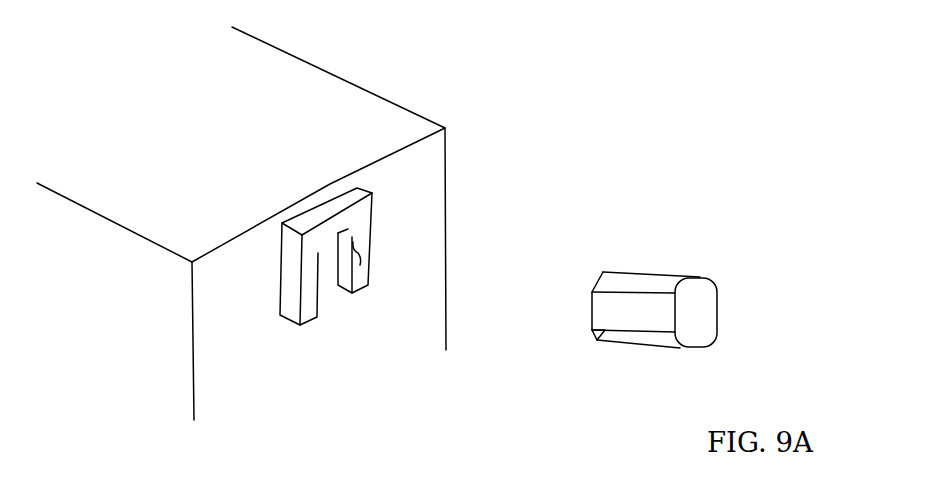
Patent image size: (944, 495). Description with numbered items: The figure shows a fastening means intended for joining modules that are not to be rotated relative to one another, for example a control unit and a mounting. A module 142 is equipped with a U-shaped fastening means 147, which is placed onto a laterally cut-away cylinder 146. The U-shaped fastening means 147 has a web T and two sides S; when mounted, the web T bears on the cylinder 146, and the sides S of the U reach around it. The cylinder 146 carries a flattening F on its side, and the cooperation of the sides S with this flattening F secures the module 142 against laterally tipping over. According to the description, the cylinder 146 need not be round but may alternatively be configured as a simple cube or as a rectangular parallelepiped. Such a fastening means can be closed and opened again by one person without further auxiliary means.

The module 142 is at (207, 143).
The U-shaped fastening means 147 is at (358, 216).
The laterally cut-away cylinder 146 is at (838, 253).
The web T is at (345, 197).
The sides of the U S is at (292, 293).
The flattening F is at (618, 313).